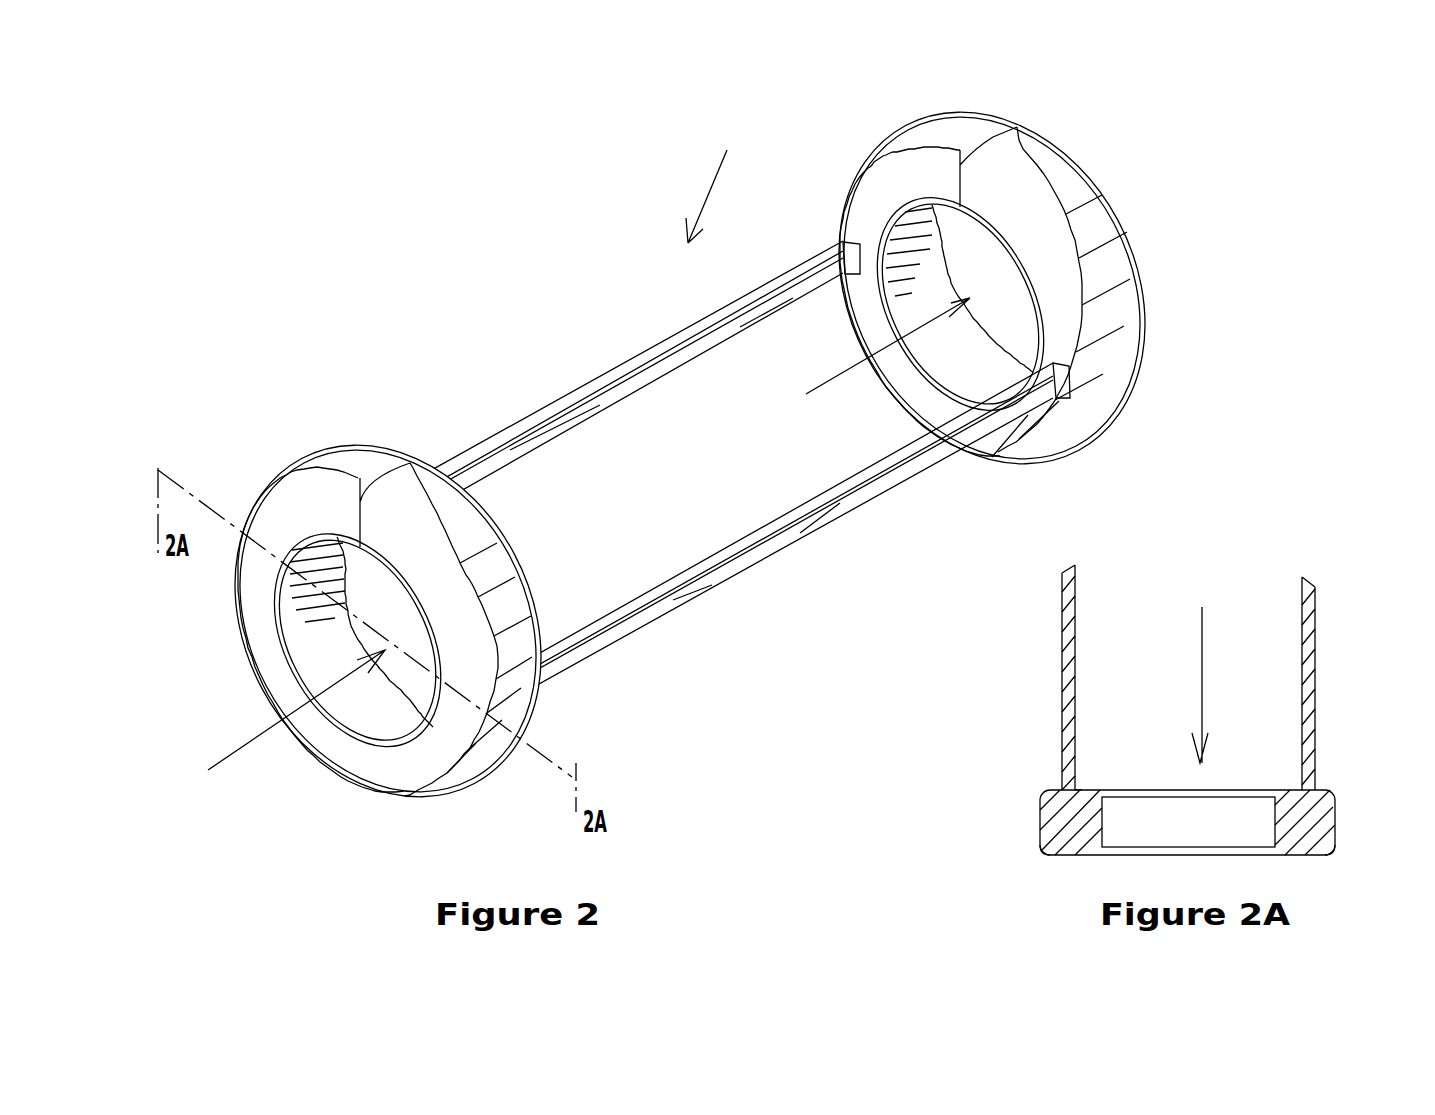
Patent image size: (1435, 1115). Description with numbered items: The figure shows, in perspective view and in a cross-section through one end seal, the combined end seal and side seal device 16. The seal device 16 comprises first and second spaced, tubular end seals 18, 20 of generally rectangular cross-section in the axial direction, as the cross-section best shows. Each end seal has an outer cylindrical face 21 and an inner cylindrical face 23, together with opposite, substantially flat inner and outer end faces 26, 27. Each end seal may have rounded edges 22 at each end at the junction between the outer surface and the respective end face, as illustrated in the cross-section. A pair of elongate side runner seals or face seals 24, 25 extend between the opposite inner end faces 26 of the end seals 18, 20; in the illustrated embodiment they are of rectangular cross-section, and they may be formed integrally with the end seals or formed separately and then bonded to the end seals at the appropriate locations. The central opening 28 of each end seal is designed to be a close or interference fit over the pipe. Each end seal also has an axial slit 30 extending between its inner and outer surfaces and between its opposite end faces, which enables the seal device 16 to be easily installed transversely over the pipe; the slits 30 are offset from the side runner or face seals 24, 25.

In FIG. 2, the seal device 16 is at (715, 180).
In FIG. 2, the first end seal 18 is at (640, 509).
In FIG. 2, the second end seal 20 is at (1097, 277).
In FIG. 2, the outer cylindrical face 21 is at (485, 565).
In FIG. 2A, the outer cylindrical face 21 is at (1040, 813).
In FIG. 2, the rounded edges 22 is at (1073, 212).
In FIG. 2A, the rounded edges 22 is at (1044, 852).
In FIG. 2, the inner cylindrical face 23 is at (378, 690).
In FIG. 2A, the inner cylindrical face 23 is at (1102, 813).
In FIG. 2, the side runner seal 24 is at (638, 370).
In FIG. 2A, the side runner seal 24 is at (1303, 712).
In FIG. 2, the side runner seal 25 is at (842, 502).
In FIG. 2A, the side runner seal 25 is at (1062, 665).
In FIG. 2, the inner end face 26 is at (505, 505).
In FIG. 2A, the inner end face 26 is at (1082, 790).
In FIG. 2, the outer end face 27 is at (268, 633).
In FIG. 2A, the outer end face 27 is at (1310, 860).
In FIG. 2, the central opening 28 is at (570, 546).
In FIG. 2A, the central opening 28 is at (1215, 678).
In FIG. 2, the axial slit 30 is at (988, 138).